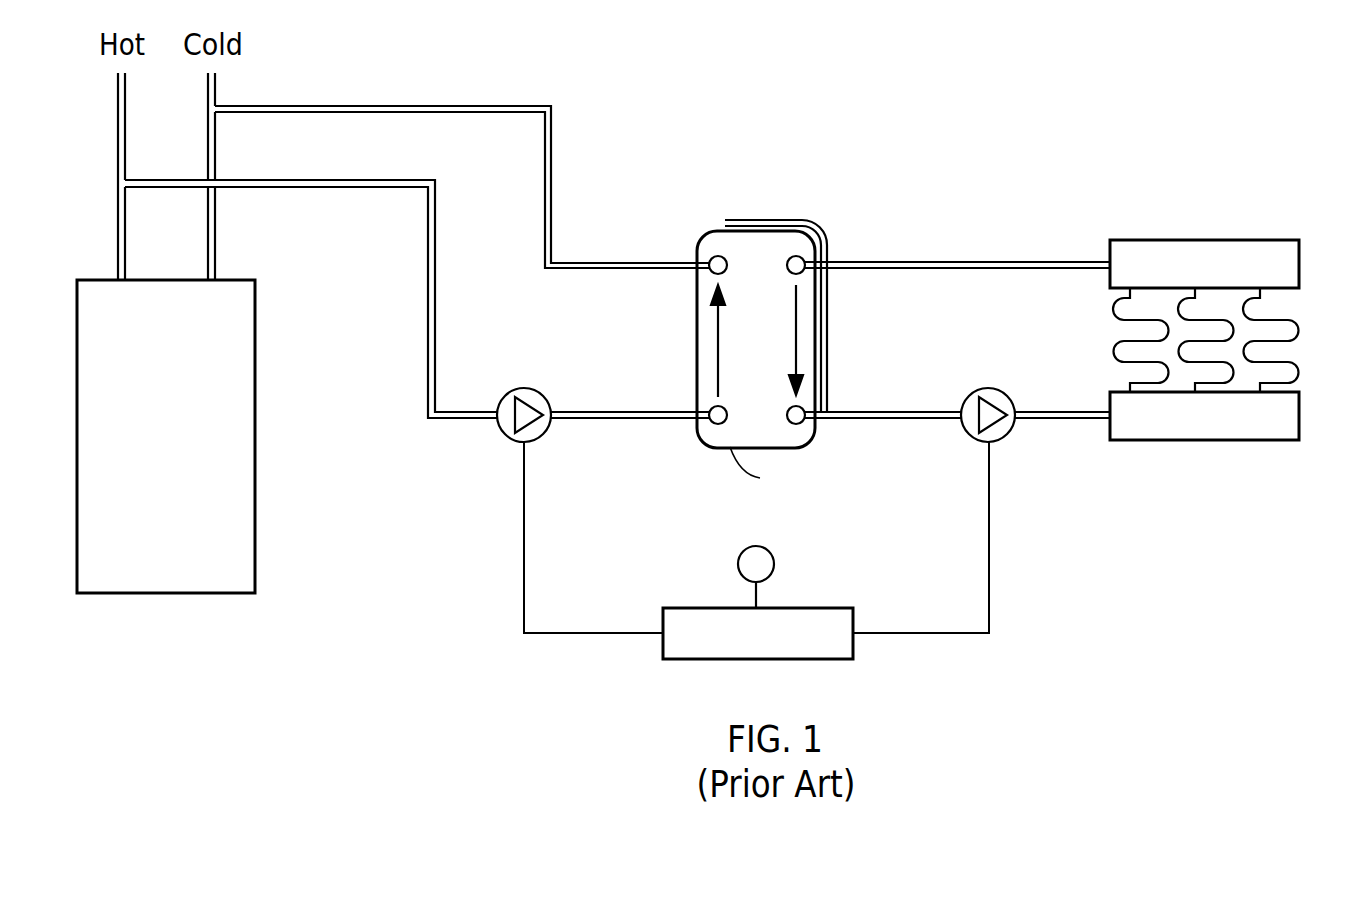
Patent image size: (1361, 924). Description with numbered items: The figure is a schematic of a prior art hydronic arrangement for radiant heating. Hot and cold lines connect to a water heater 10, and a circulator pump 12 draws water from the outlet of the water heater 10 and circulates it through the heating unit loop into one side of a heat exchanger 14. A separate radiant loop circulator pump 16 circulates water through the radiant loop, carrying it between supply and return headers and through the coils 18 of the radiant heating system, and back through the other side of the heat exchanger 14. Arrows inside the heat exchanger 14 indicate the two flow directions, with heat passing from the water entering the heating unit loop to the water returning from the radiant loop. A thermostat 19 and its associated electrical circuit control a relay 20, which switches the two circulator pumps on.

The water heater 10 is at (131, 596).
The circulator pump 12 is at (527, 388).
The heat exchanger 14 is at (809, 337).
The radiant loop circulator pump 16 is at (991, 388).
The coils 18 is at (1299, 330).
The thermostat 19 is at (775, 559).
The relay 20 is at (718, 607).